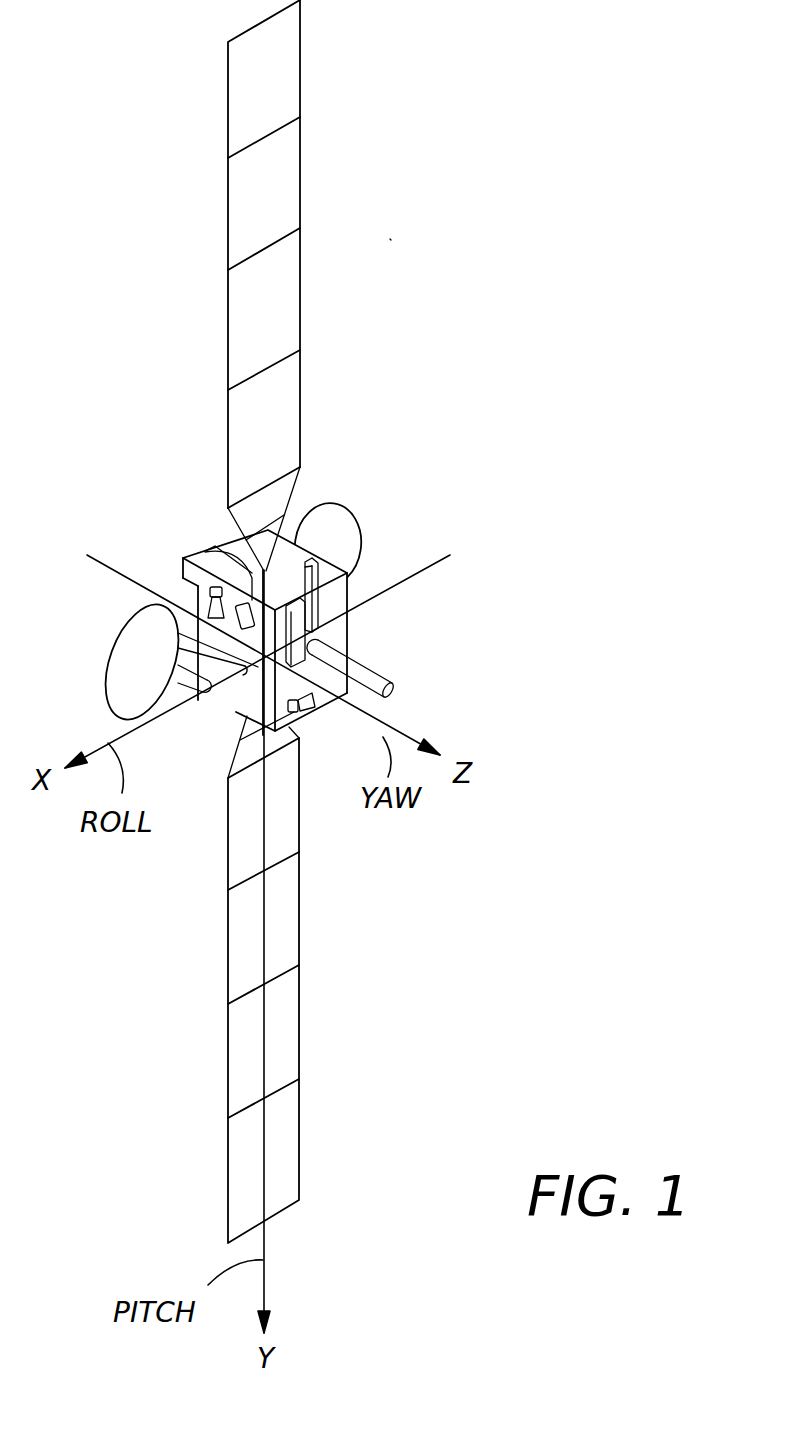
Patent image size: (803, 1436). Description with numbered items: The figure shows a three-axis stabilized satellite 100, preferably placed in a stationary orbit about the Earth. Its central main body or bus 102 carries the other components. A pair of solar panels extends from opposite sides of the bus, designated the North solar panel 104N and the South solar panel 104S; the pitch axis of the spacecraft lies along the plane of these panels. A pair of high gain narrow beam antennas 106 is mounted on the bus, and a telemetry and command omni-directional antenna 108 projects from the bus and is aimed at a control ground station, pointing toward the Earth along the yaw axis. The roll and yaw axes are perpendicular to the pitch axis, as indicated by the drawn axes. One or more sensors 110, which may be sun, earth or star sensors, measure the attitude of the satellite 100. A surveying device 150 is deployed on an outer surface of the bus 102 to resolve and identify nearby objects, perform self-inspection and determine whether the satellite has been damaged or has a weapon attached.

The three-axis stabilized satellite 100 is at (392, 238).
The main body or bus 102 is at (338, 632).
The North solar panel 104N is at (278, 188).
The South solar panel 104S is at (288, 1030).
The high gain narrow beam antenna 106 is at (347, 512).
The telemetry and command omni-directional antenna 108 is at (392, 683).
The sensor 110 is at (203, 598).
The surveying device 150 is at (212, 548).